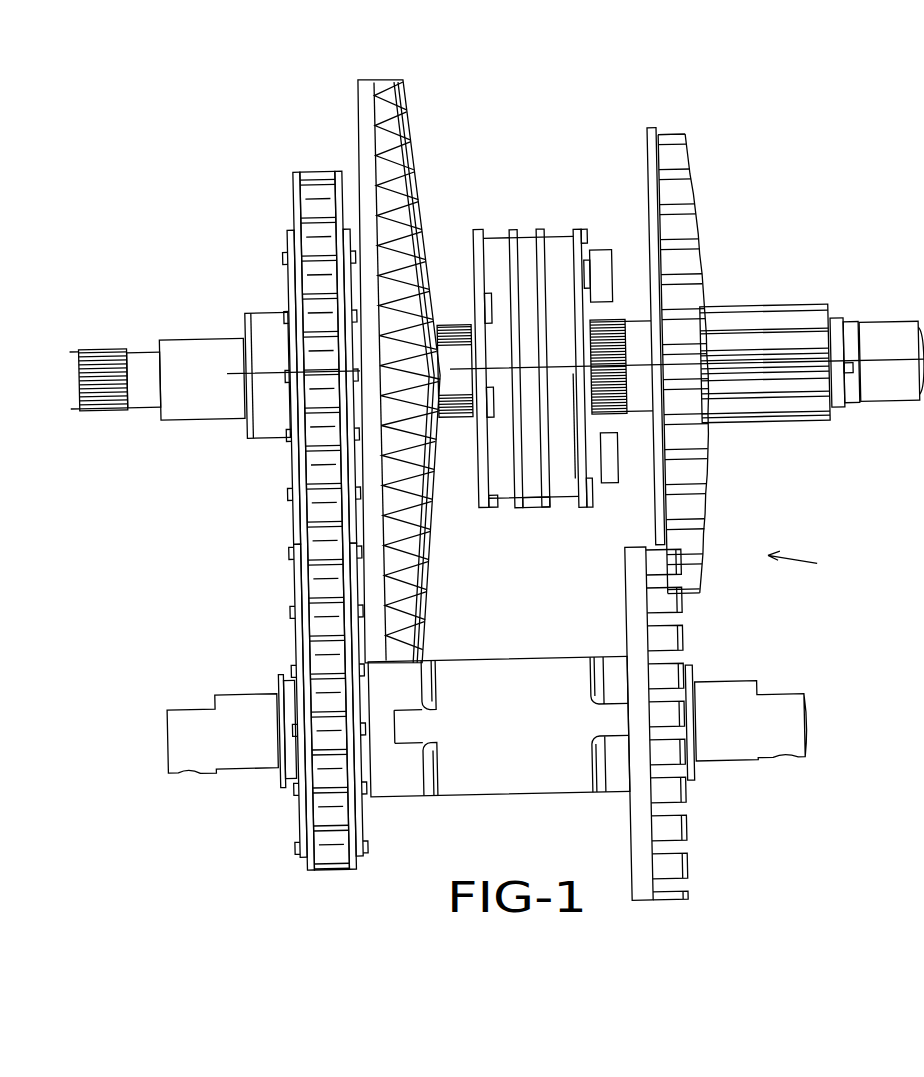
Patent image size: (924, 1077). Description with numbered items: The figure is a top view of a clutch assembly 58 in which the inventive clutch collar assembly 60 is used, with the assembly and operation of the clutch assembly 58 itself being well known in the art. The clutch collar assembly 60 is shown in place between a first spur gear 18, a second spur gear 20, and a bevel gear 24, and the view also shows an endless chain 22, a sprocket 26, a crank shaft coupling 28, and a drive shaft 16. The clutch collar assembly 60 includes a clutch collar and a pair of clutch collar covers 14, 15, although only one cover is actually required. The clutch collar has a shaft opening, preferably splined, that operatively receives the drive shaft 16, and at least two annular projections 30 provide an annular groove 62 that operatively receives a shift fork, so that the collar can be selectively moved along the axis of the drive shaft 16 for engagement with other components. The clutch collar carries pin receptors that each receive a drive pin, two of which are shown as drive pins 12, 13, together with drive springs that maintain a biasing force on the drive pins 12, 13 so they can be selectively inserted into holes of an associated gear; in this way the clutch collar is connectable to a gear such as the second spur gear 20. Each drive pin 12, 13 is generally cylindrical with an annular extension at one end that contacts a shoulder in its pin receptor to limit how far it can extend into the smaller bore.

The drive pin 12 is at (602, 254).
The drive pin 13 is at (603, 479).
The clutch collar cover 14 is at (583, 240).
The clutch collar cover 15 is at (481, 235).
The drive shaft 16 is at (115, 342).
The first spur gear 18 is at (671, 890).
The second spur gear 20 is at (677, 136).
The endless chain 22 is at (322, 181).
The bevel gear 24 is at (376, 94).
The sprocket 26 is at (323, 864).
The crank shaft coupling 28 is at (513, 772).
The annular projections 30 is at (524, 235).
The clutch assembly 58 is at (836, 571).
The clutch collar assembly 60 is at (560, 175).
The annular groove 62 is at (532, 521).